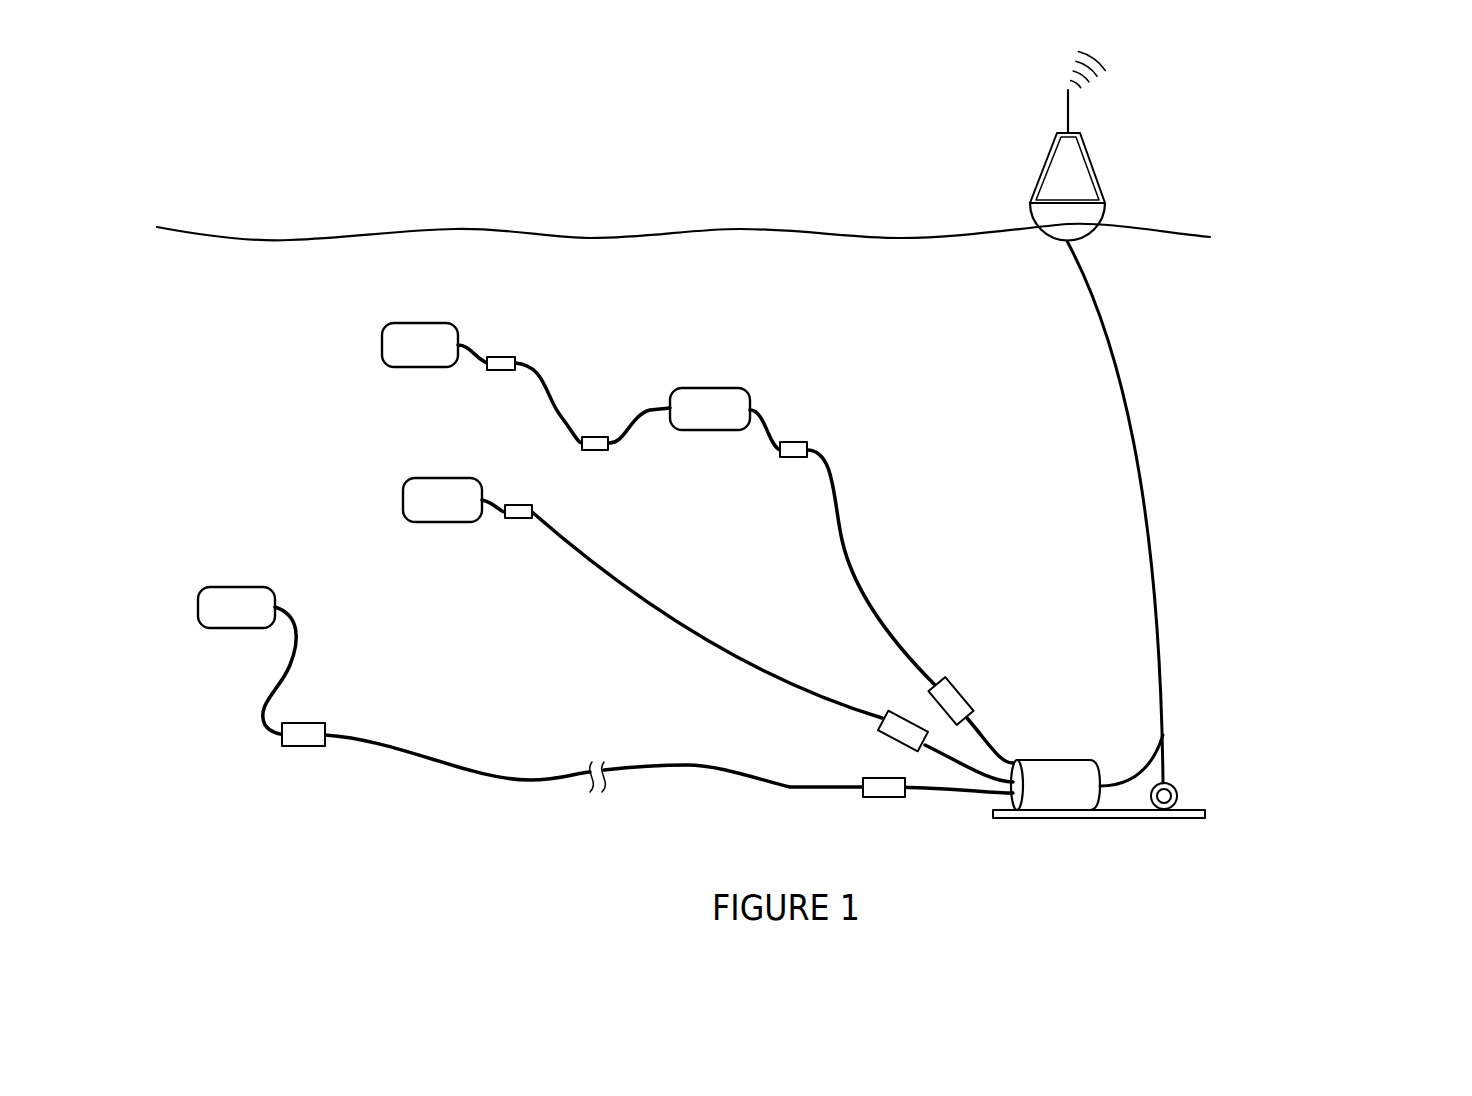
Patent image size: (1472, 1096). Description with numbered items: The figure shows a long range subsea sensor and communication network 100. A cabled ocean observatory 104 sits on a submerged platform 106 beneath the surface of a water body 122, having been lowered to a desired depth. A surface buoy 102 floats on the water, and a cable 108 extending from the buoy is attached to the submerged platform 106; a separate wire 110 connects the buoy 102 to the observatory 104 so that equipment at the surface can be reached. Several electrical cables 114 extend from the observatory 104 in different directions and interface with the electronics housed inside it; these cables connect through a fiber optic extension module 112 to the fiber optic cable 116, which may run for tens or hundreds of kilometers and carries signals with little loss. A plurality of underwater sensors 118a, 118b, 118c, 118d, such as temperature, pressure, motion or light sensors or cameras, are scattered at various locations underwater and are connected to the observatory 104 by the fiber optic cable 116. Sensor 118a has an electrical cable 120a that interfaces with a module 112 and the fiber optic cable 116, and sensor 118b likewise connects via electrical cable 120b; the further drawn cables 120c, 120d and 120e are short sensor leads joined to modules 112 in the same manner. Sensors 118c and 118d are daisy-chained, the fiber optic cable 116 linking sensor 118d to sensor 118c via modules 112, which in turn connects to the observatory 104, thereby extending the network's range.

The long range subsea sensor and communication network 100 is at (1335, 115).
The surface buoy 102 is at (1100, 188).
The cabled ocean observatory 104 is at (1085, 808).
The submerged platform 106 is at (1193, 808).
The cable 108 is at (1120, 370).
The wire 110 is at (1138, 763).
The fiber optic extension module 112 is at (487, 370).
The electrical cables 114 is at (993, 757).
The fiber optic cable 116 is at (545, 392).
The underwater sensor 118a is at (207, 590).
The underwater sensor 118b is at (410, 480).
The underwater sensor 118c is at (682, 390).
The underwater sensor 118d is at (385, 325).
The electrical cable 120a is at (293, 662).
The electrical cable 120b is at (507, 520).
The pigtail cable 120c is at (762, 418).
The pigtail cable 120d is at (608, 450).
The pigtail cable 120e is at (477, 352).
The water body 122 is at (747, 228).